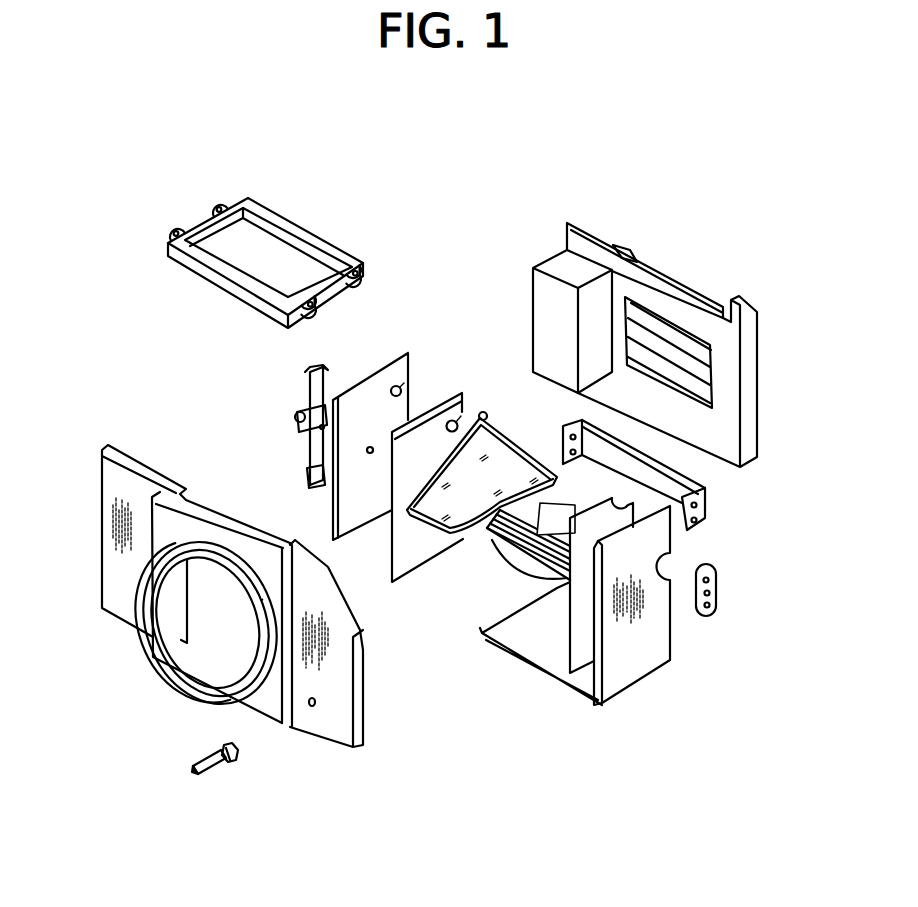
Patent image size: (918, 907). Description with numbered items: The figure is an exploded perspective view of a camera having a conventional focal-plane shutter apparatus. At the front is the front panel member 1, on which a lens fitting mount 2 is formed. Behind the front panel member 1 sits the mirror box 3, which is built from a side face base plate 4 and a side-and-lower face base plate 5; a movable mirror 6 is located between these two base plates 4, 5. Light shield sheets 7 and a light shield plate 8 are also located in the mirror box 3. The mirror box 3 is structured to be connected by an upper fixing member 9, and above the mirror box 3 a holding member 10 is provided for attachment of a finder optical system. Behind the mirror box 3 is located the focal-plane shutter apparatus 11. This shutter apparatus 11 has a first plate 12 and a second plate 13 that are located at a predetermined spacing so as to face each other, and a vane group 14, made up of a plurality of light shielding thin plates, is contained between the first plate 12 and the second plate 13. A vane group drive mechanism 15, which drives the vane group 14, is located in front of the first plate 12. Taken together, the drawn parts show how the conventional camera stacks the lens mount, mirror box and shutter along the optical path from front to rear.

The front panel member 1 is at (322, 718).
The lens fitting mount 2 is at (210, 690).
The mirror box 3 is at (442, 391).
The side face base plate 4 is at (347, 508).
The side-and-lower face base plate 5 is at (633, 668).
The movable mirror 6 is at (513, 467).
The light shield sheets 7 is at (428, 548).
The light shield plate 8 is at (513, 552).
The upper fixing member 9 is at (342, 248).
The holding member 10 is at (709, 512).
The focal-plane shutter apparatus 11 is at (619, 281).
The first plate 12 is at (735, 370).
The second plate 13 is at (670, 277).
The vane group 14 is at (694, 346).
The vane group drive mechanism 15 is at (542, 310).